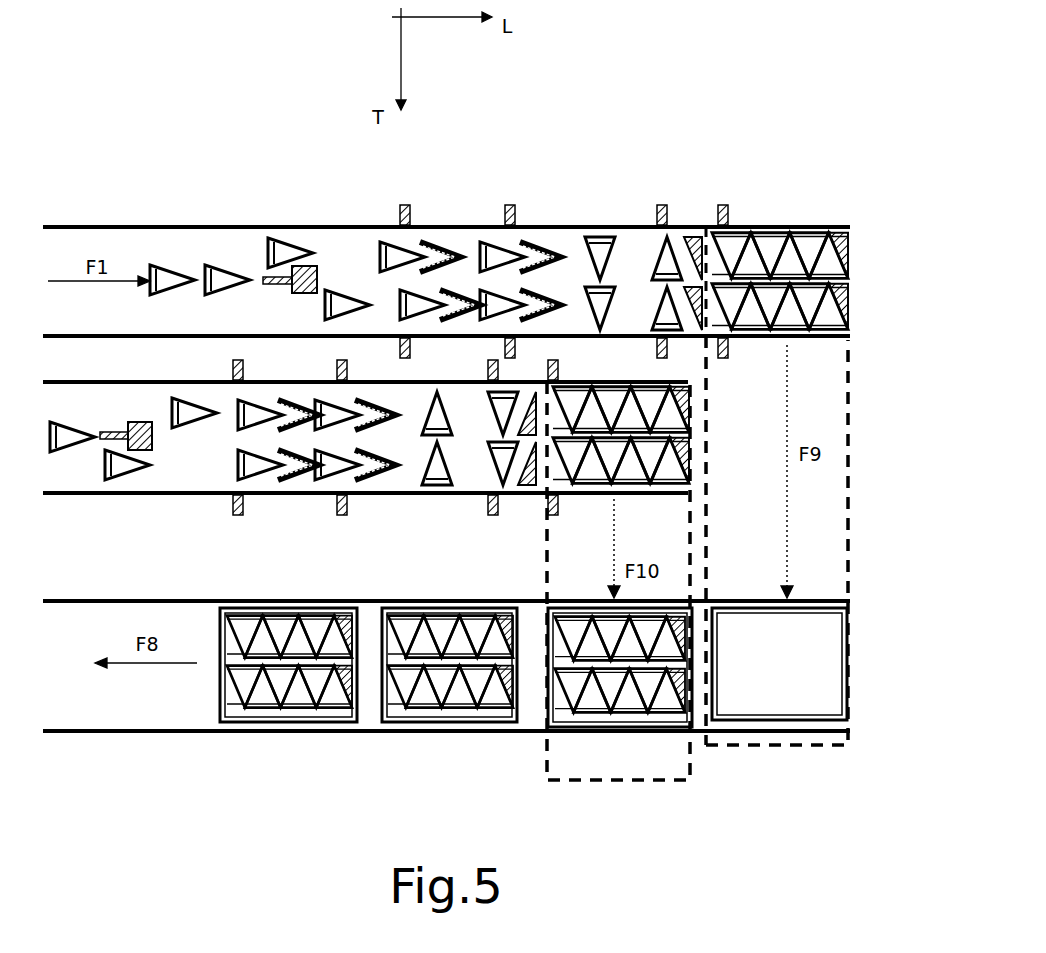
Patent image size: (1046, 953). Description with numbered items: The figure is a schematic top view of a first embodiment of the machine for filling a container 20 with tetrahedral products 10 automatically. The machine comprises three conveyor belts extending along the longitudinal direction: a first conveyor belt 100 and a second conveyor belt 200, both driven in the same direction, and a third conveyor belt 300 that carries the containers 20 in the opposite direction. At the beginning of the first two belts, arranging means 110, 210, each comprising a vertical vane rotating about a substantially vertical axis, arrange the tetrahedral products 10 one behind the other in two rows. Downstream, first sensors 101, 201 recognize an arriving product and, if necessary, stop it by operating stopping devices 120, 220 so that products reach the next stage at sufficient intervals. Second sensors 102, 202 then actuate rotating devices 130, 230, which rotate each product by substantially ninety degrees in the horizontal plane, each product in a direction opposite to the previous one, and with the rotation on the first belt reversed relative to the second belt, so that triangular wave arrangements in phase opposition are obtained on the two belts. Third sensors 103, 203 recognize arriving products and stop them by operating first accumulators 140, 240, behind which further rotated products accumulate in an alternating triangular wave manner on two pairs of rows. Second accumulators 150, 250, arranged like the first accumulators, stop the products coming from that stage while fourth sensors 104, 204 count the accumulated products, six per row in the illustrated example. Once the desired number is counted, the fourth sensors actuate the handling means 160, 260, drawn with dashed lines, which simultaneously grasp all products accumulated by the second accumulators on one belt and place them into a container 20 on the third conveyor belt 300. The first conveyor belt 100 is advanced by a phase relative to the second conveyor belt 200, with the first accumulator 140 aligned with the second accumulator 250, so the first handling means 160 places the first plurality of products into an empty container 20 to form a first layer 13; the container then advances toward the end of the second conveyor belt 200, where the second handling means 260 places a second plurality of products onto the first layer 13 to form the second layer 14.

The tetrahedral product 10 is at (213, 262).
The first layer 13 is at (760, 340).
The second layer 14 is at (648, 476).
The container 20 is at (730, 726).
The first conveyor belt 100 is at (130, 228).
The first sensor 101 is at (410, 204).
The second sensor 102 is at (512, 204).
The third sensor 103 is at (665, 204).
The fourth sensor 104 is at (728, 204).
The arranging means 110 is at (305, 265).
The stopping device 120 is at (443, 242).
The rotating device 130 is at (545, 242).
The first accumulator 140 is at (698, 240).
The second accumulator 150 is at (835, 228).
The first handling means 160 is at (778, 748).
The second conveyor belt 200 is at (55, 496).
The first sensor 201 is at (240, 517).
The second sensor 202 is at (345, 517).
The third sensor 203 is at (492, 517).
The fourth sensor 204 is at (557, 517).
The arranging means 210 is at (145, 452).
The stopping device 220 is at (285, 478).
The rotating device 230 is at (385, 478).
The first accumulator 240 is at (528, 492).
The second accumulator 250 is at (692, 418).
The second handling means 260 is at (620, 783).
The third conveyor belt 300 is at (80, 734).